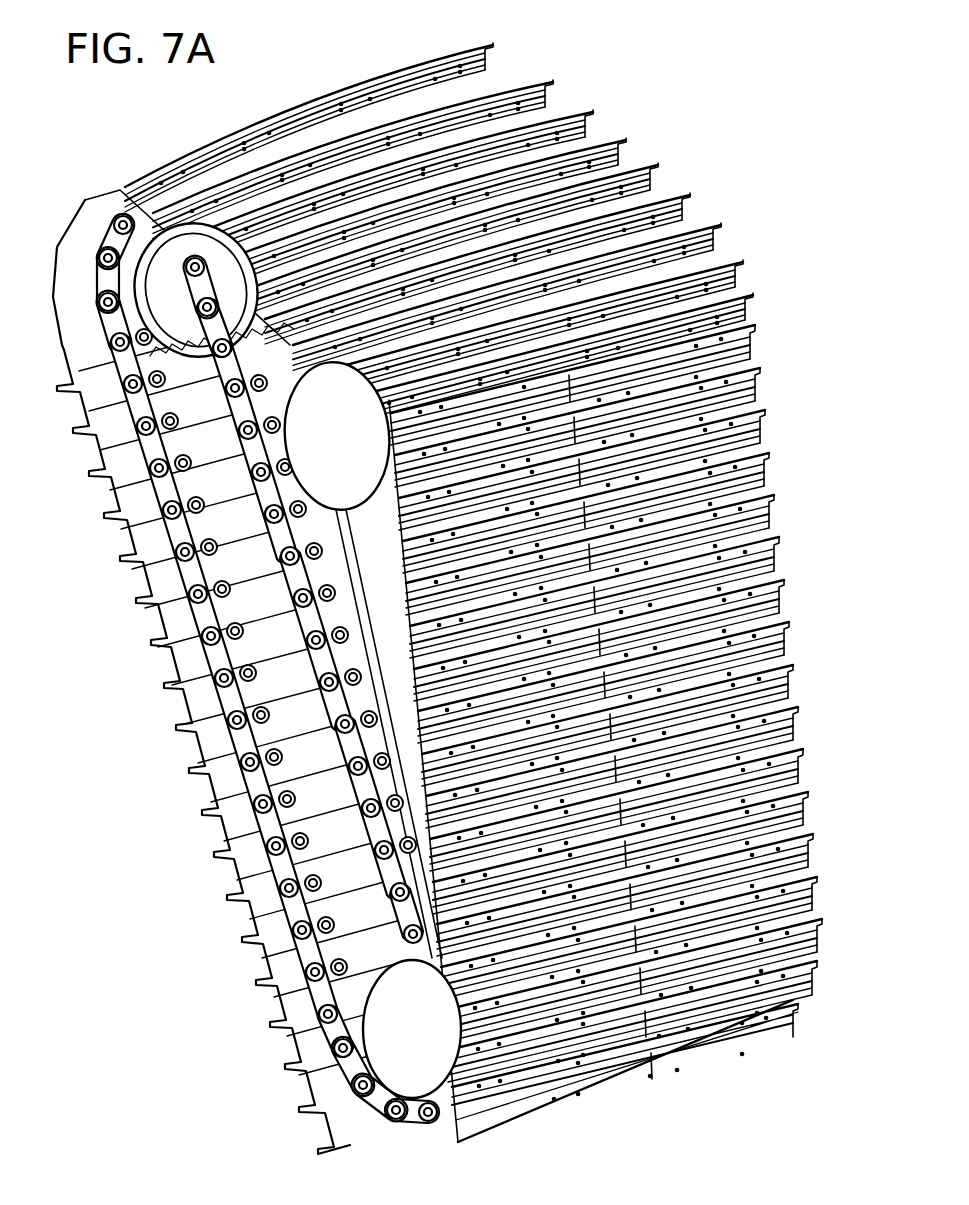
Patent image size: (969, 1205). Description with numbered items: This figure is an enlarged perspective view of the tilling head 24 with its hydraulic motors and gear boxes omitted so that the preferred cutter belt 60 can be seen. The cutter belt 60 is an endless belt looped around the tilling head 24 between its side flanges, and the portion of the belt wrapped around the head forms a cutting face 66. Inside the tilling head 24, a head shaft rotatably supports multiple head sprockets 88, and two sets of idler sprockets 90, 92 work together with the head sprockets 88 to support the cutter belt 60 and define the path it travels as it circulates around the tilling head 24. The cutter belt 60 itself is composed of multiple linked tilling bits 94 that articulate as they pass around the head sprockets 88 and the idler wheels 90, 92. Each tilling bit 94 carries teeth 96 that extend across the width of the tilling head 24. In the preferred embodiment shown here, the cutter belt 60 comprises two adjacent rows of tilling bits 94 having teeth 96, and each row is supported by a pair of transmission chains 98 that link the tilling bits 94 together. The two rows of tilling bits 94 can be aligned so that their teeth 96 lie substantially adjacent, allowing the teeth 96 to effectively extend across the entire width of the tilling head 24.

The tilling head 24 is at (626, 79).
The cutter belt 60 is at (708, 257).
The cutting face 66 is at (764, 512).
The head sprockets 88 is at (100, 343).
The idler sprockets 90 is at (363, 446).
The idler sprockets 92 is at (433, 1039).
The tilling bits 94 is at (243, 135).
The teeth 96 is at (143, 185).
The transmission chains 98 is at (160, 614).